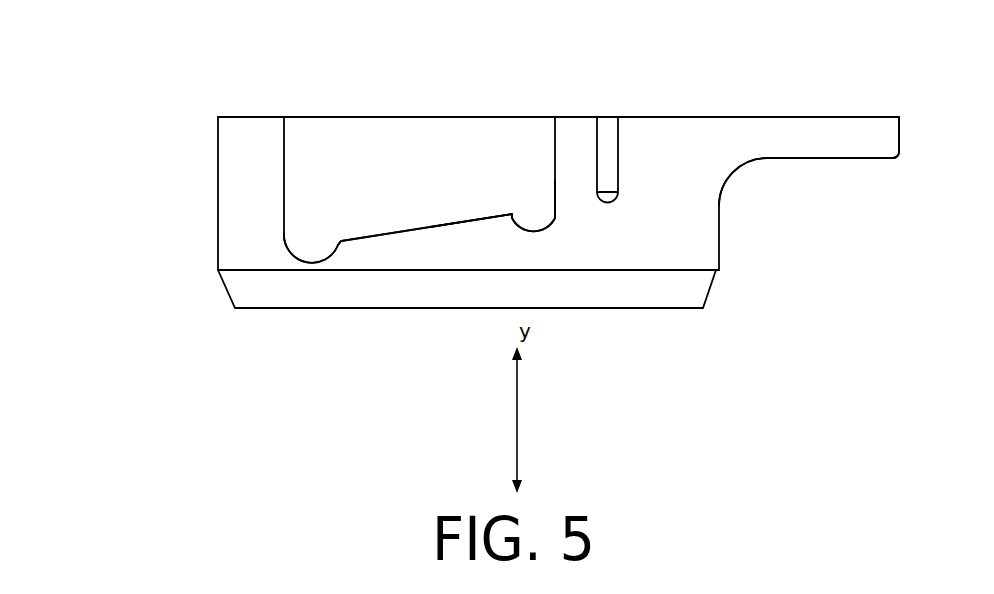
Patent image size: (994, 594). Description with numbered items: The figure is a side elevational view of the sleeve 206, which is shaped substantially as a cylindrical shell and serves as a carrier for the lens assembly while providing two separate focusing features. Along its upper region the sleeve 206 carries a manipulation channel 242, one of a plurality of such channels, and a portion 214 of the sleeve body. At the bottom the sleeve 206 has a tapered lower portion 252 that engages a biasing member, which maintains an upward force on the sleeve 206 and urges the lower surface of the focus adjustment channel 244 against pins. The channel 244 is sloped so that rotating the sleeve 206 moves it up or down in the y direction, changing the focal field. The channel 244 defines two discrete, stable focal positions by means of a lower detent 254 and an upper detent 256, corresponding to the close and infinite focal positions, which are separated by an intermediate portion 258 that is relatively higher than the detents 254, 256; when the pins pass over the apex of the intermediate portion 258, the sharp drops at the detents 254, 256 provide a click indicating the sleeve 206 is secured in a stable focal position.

The sleeve 206 is at (110, 163).
The arm 214 is at (808, 139).
The manipulation channel 242 is at (610, 188).
The focus adjustment channel 244 is at (426, 210).
The tapered lower portion 252 is at (711, 286).
The lower detent 254 is at (297, 258).
The upper detent 256 is at (543, 218).
The intermediate portion 258 is at (485, 217).